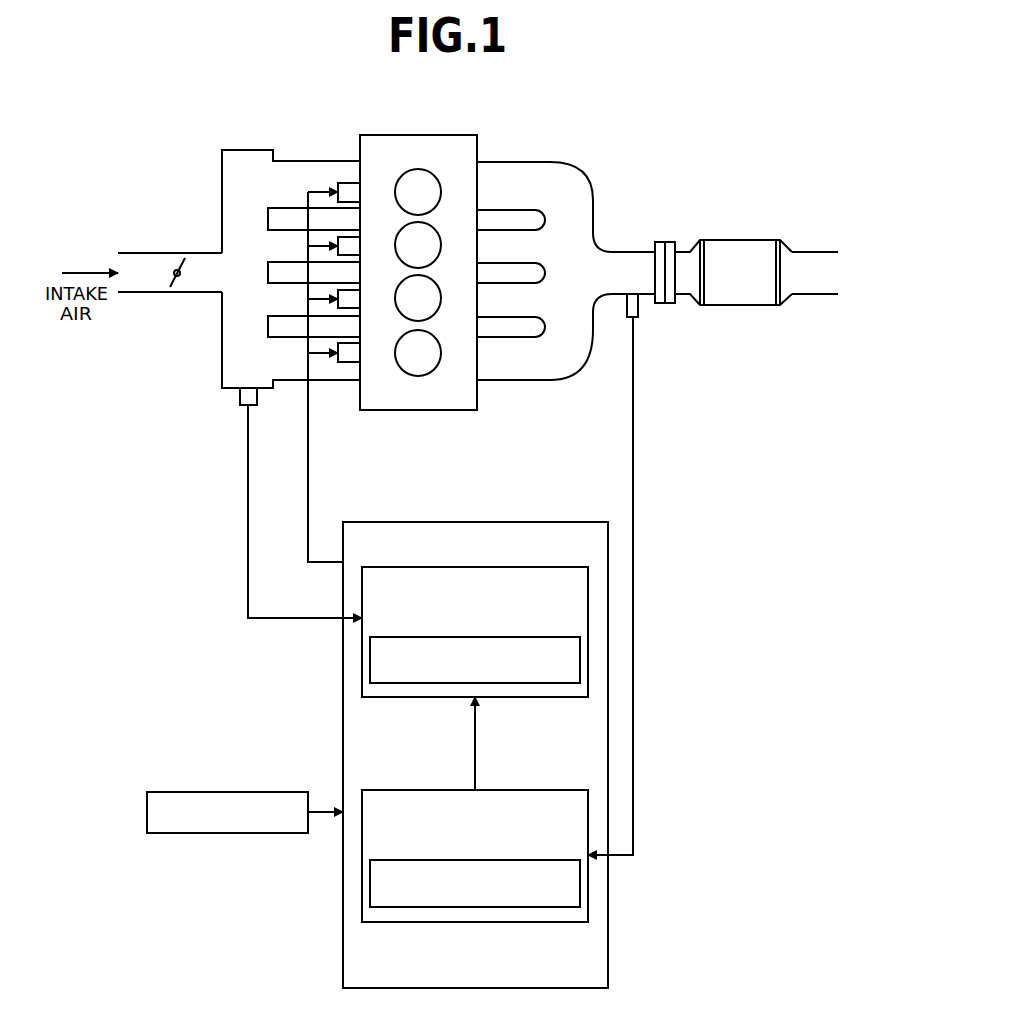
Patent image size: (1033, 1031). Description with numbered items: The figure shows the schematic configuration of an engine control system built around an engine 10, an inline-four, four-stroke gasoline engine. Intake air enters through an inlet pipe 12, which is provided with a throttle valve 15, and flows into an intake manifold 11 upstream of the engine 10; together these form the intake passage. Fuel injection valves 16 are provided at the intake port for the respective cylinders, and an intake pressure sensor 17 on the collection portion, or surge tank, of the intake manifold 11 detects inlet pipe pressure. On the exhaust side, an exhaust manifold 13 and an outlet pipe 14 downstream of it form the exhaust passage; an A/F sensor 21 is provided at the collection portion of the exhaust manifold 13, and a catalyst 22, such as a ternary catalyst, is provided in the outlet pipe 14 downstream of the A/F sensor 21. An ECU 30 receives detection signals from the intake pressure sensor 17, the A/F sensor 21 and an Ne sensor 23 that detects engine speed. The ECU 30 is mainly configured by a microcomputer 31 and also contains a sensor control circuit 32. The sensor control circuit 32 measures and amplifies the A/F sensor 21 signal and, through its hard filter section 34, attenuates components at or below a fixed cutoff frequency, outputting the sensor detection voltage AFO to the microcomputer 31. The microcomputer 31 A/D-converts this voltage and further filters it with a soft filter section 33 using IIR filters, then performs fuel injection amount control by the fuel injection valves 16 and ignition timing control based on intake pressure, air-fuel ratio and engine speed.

The engine 10 is at (415, 135).
The intake manifold 11 is at (292, 161).
The inlet pipe 12 is at (145, 253).
The exhaust manifold 13 is at (520, 162).
The outlet pipe 14 is at (810, 252).
The throttle valve 15 is at (172, 292).
The fuel injection valves 16 is at (345, 183).
The intake pressure sensor 17 is at (240, 397).
The A/F sensor 21 is at (640, 305).
The catalyst 22 is at (737, 240).
The Ne sensor 23 is at (147, 812).
The ECU 30 is at (585, 522).
The microcomputer 31 is at (570, 558).
The sensor control circuit 32 is at (570, 783).
The soft filter section 33 is at (540, 632).
The hard filter section 34 is at (540, 855).